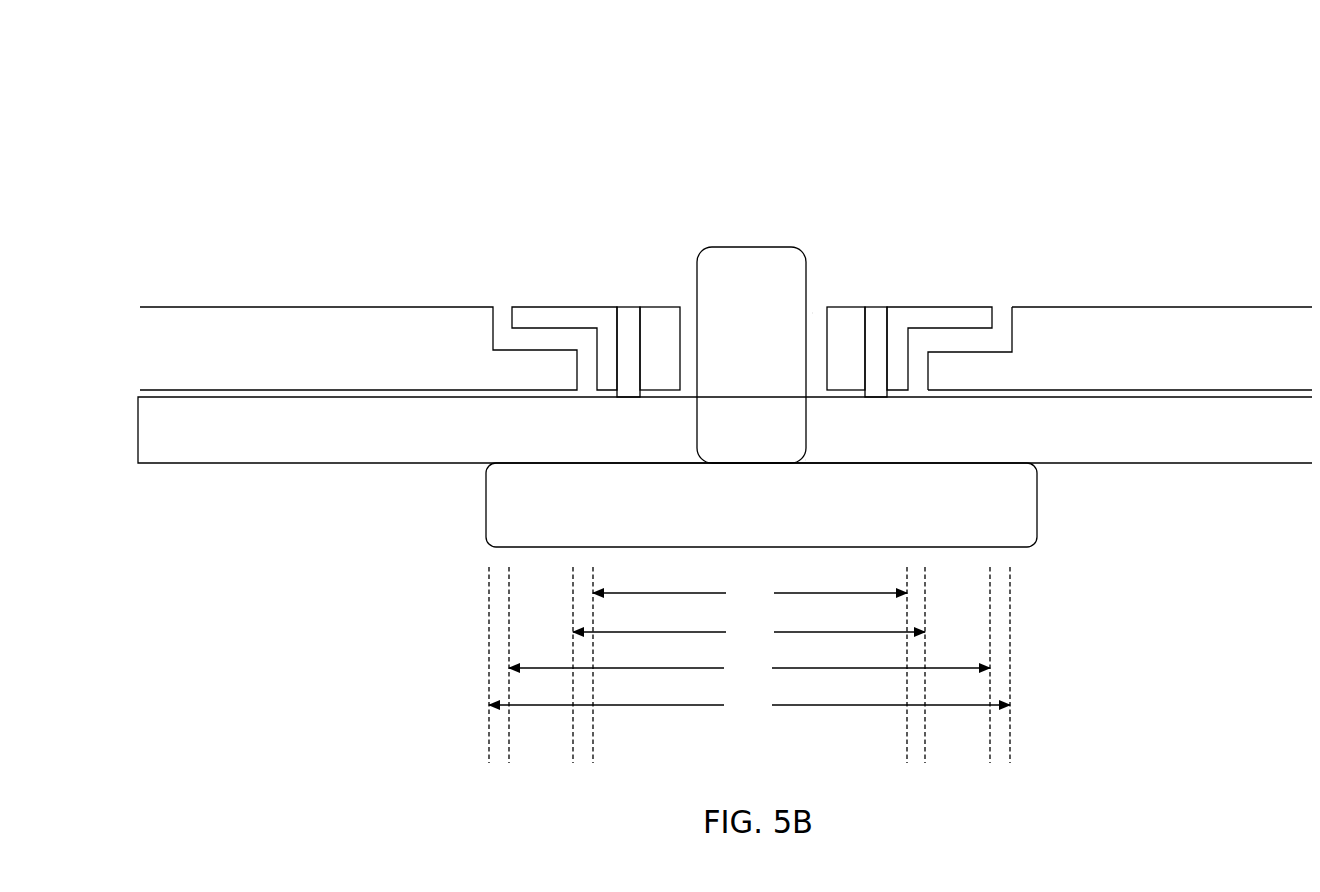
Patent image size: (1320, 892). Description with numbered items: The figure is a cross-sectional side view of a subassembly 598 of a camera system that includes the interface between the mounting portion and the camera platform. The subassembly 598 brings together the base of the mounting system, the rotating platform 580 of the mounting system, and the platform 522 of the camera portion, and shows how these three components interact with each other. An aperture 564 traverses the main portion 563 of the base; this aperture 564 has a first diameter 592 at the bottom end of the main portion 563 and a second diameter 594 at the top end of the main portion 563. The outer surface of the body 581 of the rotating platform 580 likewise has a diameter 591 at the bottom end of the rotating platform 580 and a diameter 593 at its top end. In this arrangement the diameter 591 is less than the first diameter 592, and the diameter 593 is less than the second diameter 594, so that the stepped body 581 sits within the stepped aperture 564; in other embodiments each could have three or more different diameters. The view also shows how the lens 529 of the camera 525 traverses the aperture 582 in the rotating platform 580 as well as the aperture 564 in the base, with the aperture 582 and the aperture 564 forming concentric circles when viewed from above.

The platform 522 is at (1087, 470).
The camera 525 is at (472, 516).
The lens 529 is at (760, 226).
The main portion 563 is at (243, 298).
The aperture 564 is at (973, 342).
The rotating platform 580 is at (752, 279).
The body 581 is at (592, 305).
The aperture 582 is at (812, 313).
The diameter 591 is at (750, 593).
The first diameter 592 is at (749, 632).
The diameter 593 is at (749, 668).
The second diameter 594 is at (749, 705).
The subassembly 598 is at (845, 82).